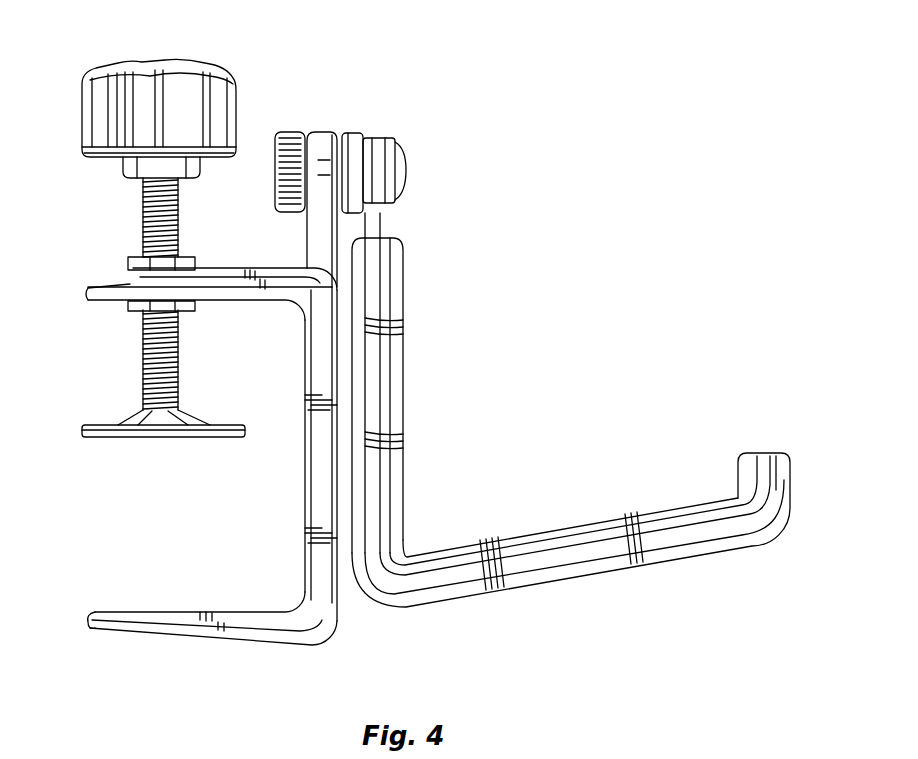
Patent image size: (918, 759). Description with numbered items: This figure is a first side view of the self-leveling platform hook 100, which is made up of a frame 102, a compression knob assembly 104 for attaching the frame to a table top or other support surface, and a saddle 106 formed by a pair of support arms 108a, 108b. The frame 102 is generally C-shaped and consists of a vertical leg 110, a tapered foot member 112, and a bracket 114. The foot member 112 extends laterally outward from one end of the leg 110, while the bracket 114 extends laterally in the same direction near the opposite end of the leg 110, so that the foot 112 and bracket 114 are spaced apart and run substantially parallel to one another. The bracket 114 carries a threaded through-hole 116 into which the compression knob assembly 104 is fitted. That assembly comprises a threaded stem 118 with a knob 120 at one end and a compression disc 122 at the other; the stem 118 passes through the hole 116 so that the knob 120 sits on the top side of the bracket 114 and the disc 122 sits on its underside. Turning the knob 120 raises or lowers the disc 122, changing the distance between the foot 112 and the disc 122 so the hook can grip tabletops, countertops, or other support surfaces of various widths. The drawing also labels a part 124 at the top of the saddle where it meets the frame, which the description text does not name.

The self-leveling platform hook 100 is at (540, 126).
The frame 102 is at (186, 457).
The compression knob assembly 104 is at (116, 202).
The saddle 106 is at (486, 454).
The support arm 108a is at (360, 292).
The support arm 108b is at (397, 358).
The vertical leg 110 is at (313, 465).
The foot member 112 is at (180, 634).
The bracket 114 is at (228, 293).
The threaded through-hole 116 is at (137, 264).
The threaded stem 118 is at (150, 370).
The knob 120 is at (176, 72).
The compression disc 122 is at (145, 424).
The pivot 124 is at (317, 121).